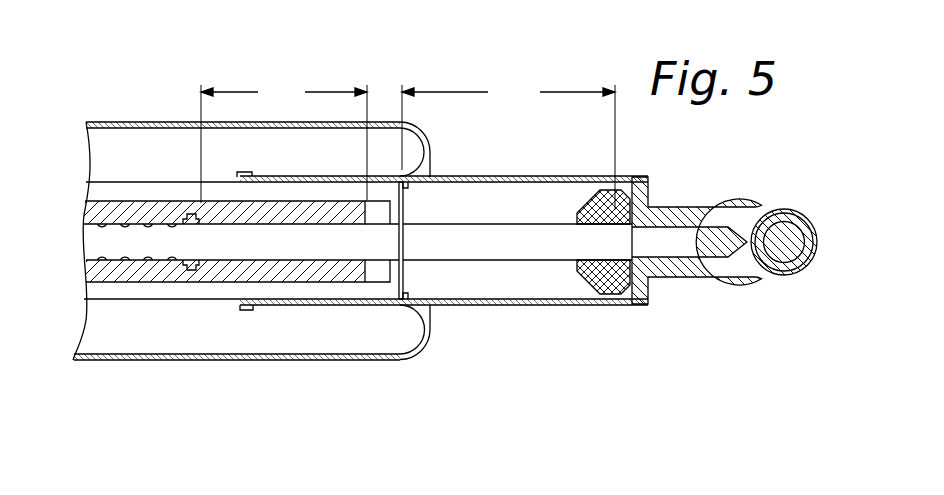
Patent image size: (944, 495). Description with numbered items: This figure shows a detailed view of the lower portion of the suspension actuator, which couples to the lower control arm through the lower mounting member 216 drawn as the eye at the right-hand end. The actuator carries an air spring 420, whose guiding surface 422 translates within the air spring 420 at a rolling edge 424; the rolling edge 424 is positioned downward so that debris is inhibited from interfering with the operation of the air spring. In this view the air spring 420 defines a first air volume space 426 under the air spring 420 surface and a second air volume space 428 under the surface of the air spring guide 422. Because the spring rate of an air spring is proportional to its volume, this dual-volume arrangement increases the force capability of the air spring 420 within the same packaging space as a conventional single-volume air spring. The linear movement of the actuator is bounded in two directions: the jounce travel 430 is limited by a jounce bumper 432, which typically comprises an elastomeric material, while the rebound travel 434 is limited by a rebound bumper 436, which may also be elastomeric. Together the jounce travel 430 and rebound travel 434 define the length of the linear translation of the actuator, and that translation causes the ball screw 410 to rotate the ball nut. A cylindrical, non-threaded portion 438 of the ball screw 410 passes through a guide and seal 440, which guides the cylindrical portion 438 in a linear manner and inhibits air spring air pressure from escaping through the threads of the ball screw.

The lower mounting member 216 is at (787, 203).
The ball screw 410 is at (95, 240).
The air spring 420 is at (157, 122).
The guiding surface 422 is at (515, 176).
The rolling edge 424 is at (432, 148).
The first air volume space 426 is at (287, 340).
The second air volume space 428 is at (545, 286).
The jounce travel 430 is at (508, 145).
The jounce bumper 432 is at (610, 285).
The rebound travel 434 is at (284, 142).
The rebound bumper 436 is at (195, 266).
The cylindrical portion 438 is at (545, 235).
The guide and seal 440 is at (377, 273).